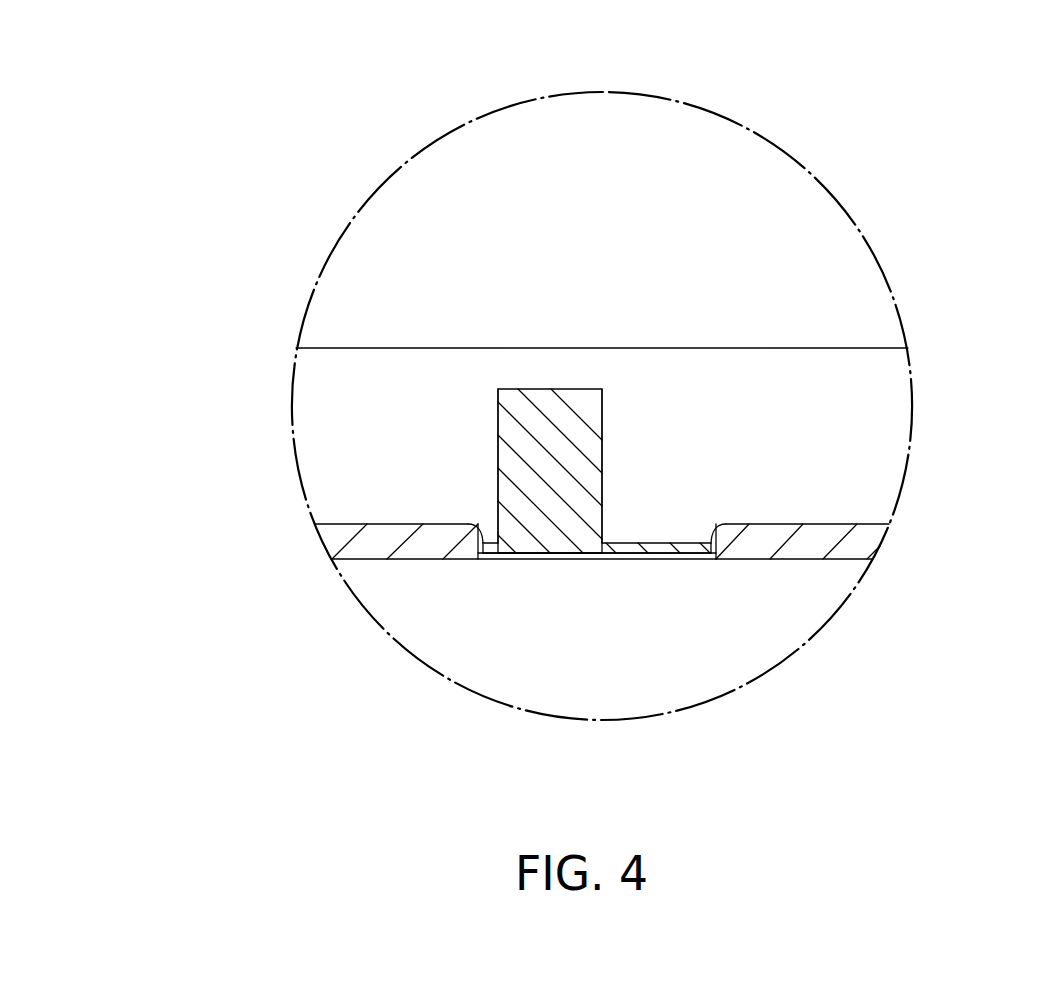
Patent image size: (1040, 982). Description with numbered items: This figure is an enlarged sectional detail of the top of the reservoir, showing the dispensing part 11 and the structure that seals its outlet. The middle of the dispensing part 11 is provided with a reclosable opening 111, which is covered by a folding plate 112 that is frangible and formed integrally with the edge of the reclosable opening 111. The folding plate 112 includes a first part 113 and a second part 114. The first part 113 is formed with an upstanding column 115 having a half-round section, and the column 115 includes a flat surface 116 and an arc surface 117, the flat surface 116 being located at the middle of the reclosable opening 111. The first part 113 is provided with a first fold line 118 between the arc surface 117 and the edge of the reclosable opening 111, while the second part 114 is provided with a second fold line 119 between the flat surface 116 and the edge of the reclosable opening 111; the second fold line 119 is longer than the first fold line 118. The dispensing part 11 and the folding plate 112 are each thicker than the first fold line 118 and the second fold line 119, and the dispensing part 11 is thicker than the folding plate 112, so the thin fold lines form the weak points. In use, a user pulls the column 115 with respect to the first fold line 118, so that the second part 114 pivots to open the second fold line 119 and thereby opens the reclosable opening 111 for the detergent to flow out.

The dispensing part 11 is at (805, 547).
The reclosable opening 111 is at (665, 532).
The folding plate 112 is at (909, 747).
The first part 113 is at (565, 547).
The second part 114 is at (662, 548).
The column 115 is at (533, 418).
The flat surface 116 is at (603, 461).
The arc surface 117 is at (497, 452).
The first fold line 118 is at (488, 542).
The second fold line 119 is at (708, 537).